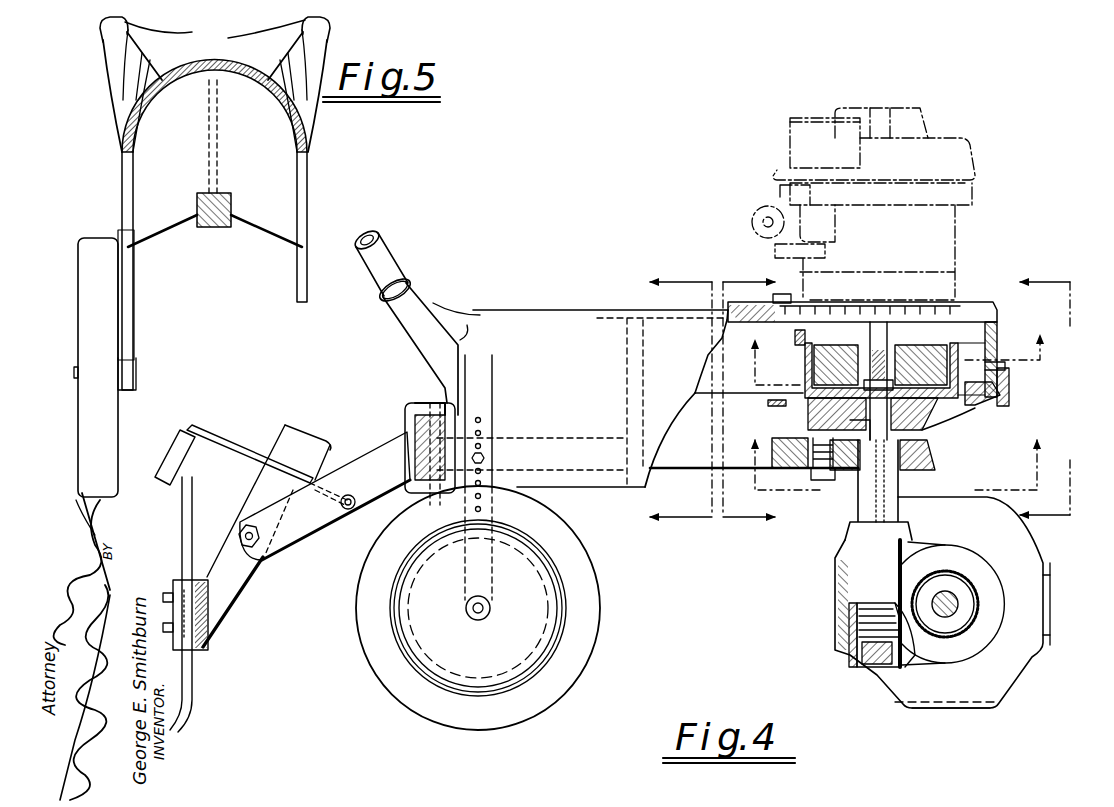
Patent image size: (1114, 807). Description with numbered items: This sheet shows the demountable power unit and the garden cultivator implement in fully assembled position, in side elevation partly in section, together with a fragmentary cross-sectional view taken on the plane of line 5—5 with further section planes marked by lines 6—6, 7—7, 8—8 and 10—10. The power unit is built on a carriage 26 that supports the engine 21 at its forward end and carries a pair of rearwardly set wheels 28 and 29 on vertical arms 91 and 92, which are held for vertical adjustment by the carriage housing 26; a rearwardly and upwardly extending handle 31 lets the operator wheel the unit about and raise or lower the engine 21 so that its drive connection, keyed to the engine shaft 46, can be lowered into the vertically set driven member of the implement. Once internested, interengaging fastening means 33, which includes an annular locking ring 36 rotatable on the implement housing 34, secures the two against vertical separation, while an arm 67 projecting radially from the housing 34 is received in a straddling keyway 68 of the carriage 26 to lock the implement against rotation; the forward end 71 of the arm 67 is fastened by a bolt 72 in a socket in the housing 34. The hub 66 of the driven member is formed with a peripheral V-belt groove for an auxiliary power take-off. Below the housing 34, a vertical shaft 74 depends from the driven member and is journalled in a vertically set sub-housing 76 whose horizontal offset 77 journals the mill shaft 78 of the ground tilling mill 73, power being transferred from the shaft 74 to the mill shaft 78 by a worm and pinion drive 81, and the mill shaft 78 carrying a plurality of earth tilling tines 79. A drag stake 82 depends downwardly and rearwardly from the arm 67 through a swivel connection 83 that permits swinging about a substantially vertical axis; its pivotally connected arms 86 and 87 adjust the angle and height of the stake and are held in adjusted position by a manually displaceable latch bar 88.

In FIG. 4, the engine 21 is at (960, 228).
In FIG. 4, the carriage 26 is at (552, 310).
In FIG. 4, the wheel 28 is at (578, 668).
In FIG. 5, the wheel 29 is at (85, 407).
In FIG. 5, the handle 31 is at (215, 84).
In FIG. 4, the handle 31 is at (388, 262).
In FIG. 4, the fastening means 33 is at (1012, 398).
In FIG. 4, the implement housing 34 is at (967, 415).
In FIG. 4, the annular locking ring 36 is at (768, 403).
In FIG. 4, the engine shaft 46 is at (887, 332).
In FIG. 4, the hub of the driven member 66 is at (905, 425).
In FIG. 5, the arm 67 is at (215, 224).
In FIG. 4, the arm 67 is at (690, 463).
In FIG. 5, the straddling keyway 68 is at (231, 202).
In FIG. 4, the forward end of arm 71 is at (795, 462).
In FIG. 4, the bolt 72 is at (825, 480).
In FIG. 4, the ground tilling mill 73 is at (1050, 560).
In FIG. 4, the vertical shaft 74 is at (878, 448).
In FIG. 4, the sub-housing 76 is at (858, 541).
In FIG. 4, the horizontal offset 77 is at (967, 648).
In FIG. 4, the mill shaft 78 is at (960, 602).
In FIG. 4, the earth tilling tines 79 is at (1052, 647).
In FIG. 4, the worm and pinion drive 81 is at (855, 625).
In FIG. 4, the drag stake 82 is at (193, 685).
In FIG. 4, the swivel connection 83 is at (425, 403).
In FIG. 4, the arm 86 is at (302, 535).
In FIG. 4, the arm 87 is at (240, 590).
In FIG. 4, the latch bar 88 is at (222, 440).
In FIG. 5, the vertical arm 91 is at (298, 280).
In FIG. 4, the vertical arm 91 is at (490, 412).
In FIG. 5, the vertical arm 92 is at (128, 327).
In FIG. 4, the section line 5— 5 is at (675, 401).
In FIG. 4, the section line 6— 6 is at (1036, 401).
In FIG. 4, the section line 7— 7 is at (757, 401).
In FIG. 4, the section line 8— 8 is at (895, 351).
In FIG. 4, the section line 10— 10 is at (896, 450).